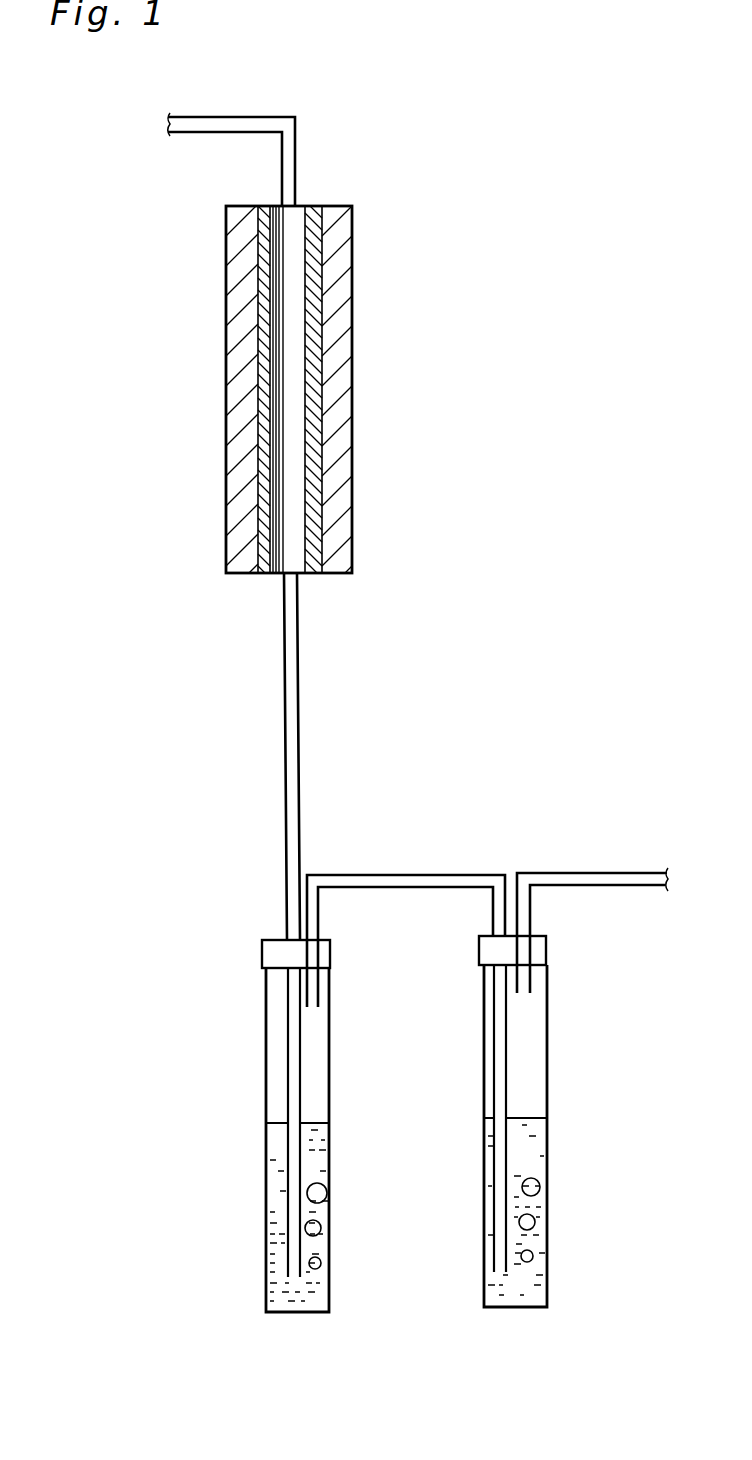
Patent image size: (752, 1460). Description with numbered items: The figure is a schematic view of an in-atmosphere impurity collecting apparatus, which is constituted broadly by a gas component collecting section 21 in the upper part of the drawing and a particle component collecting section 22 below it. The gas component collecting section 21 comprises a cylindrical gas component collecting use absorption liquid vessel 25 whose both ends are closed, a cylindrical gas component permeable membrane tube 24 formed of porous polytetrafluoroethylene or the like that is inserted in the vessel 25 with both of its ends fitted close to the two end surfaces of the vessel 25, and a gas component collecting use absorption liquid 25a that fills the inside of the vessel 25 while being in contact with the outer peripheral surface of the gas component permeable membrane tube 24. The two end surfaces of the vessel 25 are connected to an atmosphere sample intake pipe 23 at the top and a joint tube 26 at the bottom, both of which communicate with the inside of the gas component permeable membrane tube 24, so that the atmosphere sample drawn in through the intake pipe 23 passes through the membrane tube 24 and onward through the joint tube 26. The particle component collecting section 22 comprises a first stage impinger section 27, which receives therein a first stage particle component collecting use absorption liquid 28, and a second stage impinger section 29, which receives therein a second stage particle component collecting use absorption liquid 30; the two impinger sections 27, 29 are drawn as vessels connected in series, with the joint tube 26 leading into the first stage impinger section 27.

The gas component collecting section 21 is at (162, 203).
The particle component collecting section 22 is at (182, 942).
The atmosphere sample intake pipe 23 is at (223, 117).
The gas component permeable membrane tube 24 is at (318, 207).
The gas component collecting use absorption liquid vessel 25 is at (356, 347).
The gas component collecting use absorption liquid 25a is at (340, 252).
The joint tube 26 is at (298, 707).
The first stage impinger section 27 is at (329, 1028).
The first stage particle component collecting use absorption liquid 28 is at (327, 1203).
The second stage impinger section 29 is at (545, 1006).
The second stage particle component collecting use absorption liquid 30 is at (548, 1198).